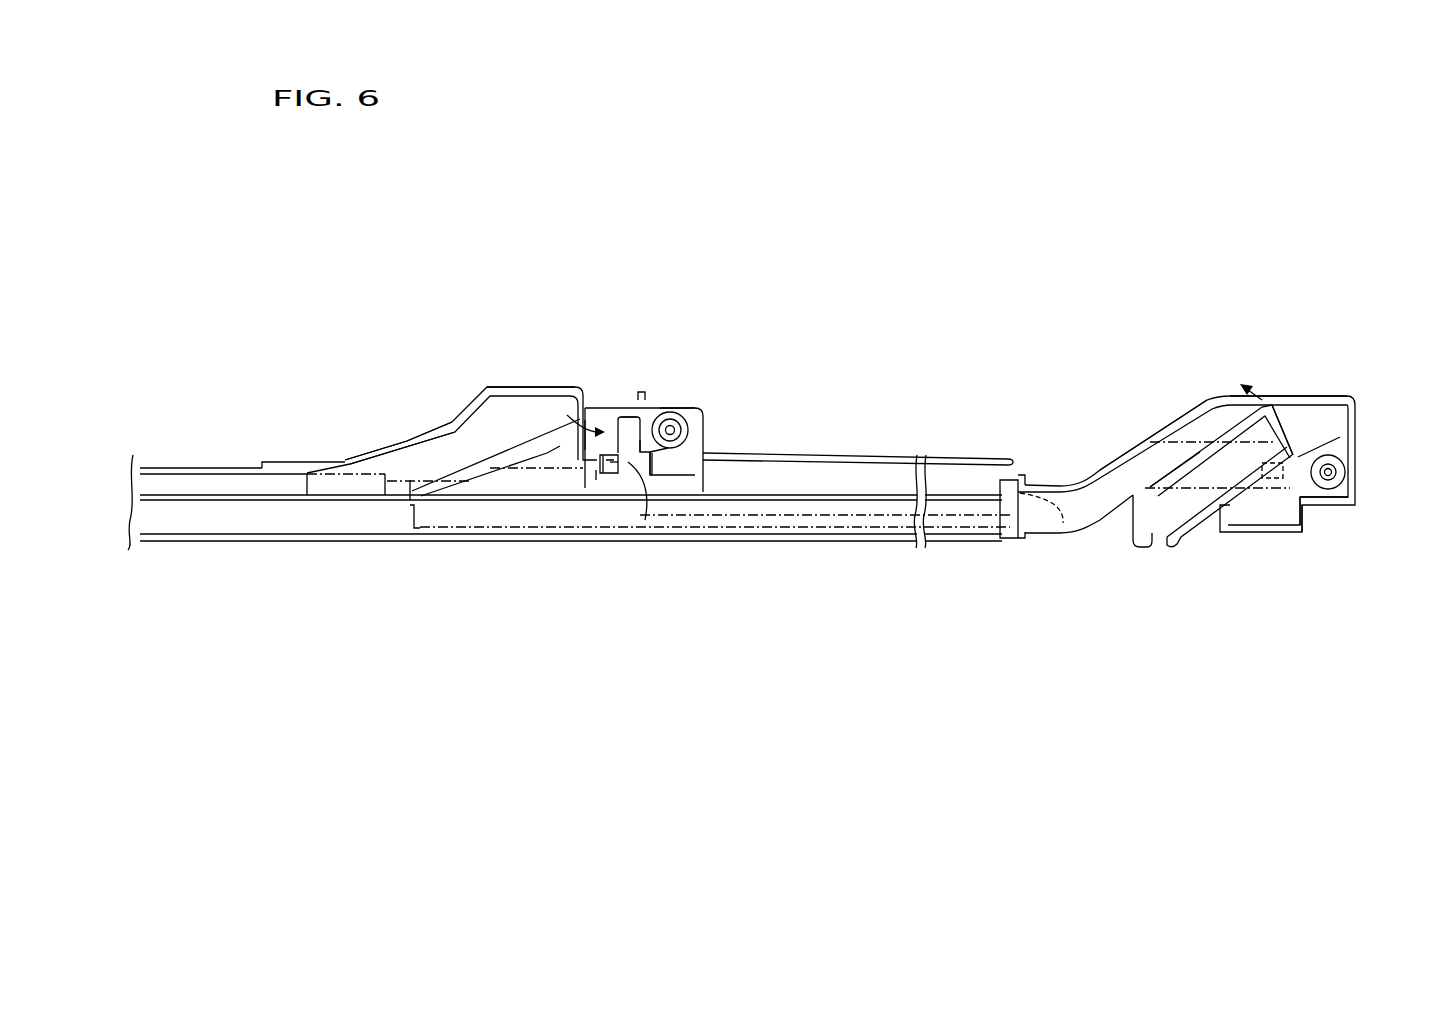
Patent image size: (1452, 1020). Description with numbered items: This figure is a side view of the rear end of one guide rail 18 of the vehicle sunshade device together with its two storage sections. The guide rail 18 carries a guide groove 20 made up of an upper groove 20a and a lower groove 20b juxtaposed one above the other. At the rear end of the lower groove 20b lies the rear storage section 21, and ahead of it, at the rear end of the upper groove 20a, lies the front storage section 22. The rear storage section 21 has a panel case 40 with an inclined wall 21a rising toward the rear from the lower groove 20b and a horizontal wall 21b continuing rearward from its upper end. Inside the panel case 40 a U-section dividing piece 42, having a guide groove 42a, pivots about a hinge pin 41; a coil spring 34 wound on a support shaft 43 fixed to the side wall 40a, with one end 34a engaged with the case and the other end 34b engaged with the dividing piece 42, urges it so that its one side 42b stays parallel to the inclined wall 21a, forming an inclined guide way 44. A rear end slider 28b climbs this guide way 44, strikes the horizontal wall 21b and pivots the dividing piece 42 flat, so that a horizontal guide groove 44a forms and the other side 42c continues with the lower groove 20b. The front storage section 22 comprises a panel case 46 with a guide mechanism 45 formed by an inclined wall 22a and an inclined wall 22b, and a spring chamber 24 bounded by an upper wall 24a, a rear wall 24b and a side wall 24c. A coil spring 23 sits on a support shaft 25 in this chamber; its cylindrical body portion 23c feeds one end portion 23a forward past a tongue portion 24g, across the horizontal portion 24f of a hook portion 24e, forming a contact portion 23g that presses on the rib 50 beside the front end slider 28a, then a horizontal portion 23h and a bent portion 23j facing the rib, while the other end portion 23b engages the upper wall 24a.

The guide rail 18 is at (252, 468).
The guide groove 20 is at (220, 360).
The upper groove 20a is at (163, 487).
The lower groove 20b is at (200, 518).
The rear storage section 21 is at (1271, 384).
The inclined wall 21a is at (1117, 452).
The horizontal wall 21b is at (1308, 395).
The front storage section 22 is at (524, 335).
The inclined wall 22a is at (403, 443).
The inclined wall 22b is at (485, 478).
The coil spring 23 is at (690, 423).
The one end portion 23a is at (655, 476).
The other end portion 23b is at (630, 420).
The cylindrical body portion 23c is at (690, 434).
The contact portion 23g is at (605, 474).
The horizontal portion 23h is at (618, 474).
The bent portion 23j is at (645, 520).
The spring chamber 24 is at (658, 400).
The upper wall 24a is at (672, 403).
The rear wall 24b is at (788, 449).
The side wall 24c is at (595, 420).
The hook portion 24e is at (567, 415).
The horizontal portion 24f is at (600, 470).
The tongue portion 24g is at (641, 392).
The support shaft 25 is at (684, 417).
The front end slider 28a is at (345, 480).
The rear end slider 28b is at (1043, 533).
The coil spring 34 is at (1340, 486).
The one end 34a is at (1305, 480).
The other end 34b is at (1340, 436).
The panel case 40 is at (1357, 417).
The side wall 40a is at (1320, 488).
The hinge pin 41 is at (1215, 462).
The dividing piece 42 is at (1210, 470).
The guide groove 42a is at (1200, 470).
The one side 42b is at (1190, 470).
The other side 42c is at (1190, 508).
The support shaft 43 is at (1330, 472).
The guide way 44 is at (1153, 447).
The horizontal guide groove 44a is at (1225, 398).
The guide mechanism 45 is at (377, 431).
The panel case 46 is at (507, 393).
The rib 50 is at (533, 495).